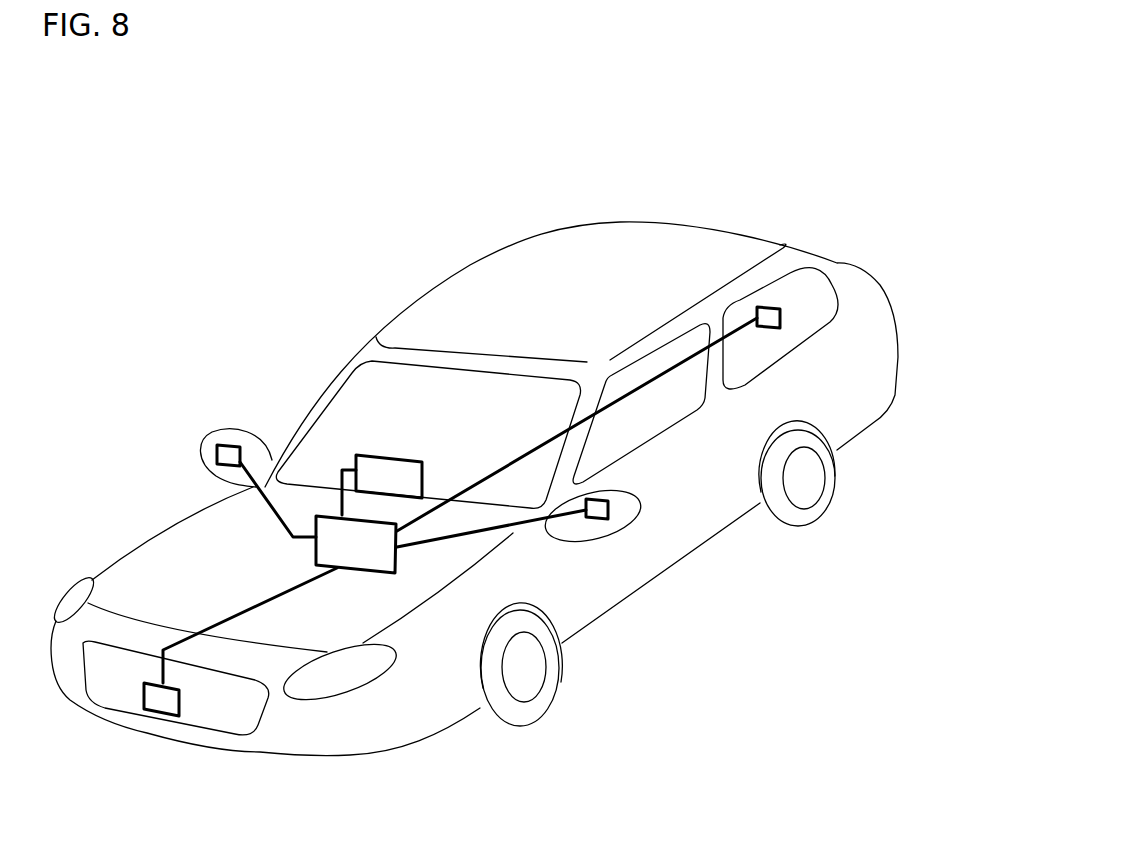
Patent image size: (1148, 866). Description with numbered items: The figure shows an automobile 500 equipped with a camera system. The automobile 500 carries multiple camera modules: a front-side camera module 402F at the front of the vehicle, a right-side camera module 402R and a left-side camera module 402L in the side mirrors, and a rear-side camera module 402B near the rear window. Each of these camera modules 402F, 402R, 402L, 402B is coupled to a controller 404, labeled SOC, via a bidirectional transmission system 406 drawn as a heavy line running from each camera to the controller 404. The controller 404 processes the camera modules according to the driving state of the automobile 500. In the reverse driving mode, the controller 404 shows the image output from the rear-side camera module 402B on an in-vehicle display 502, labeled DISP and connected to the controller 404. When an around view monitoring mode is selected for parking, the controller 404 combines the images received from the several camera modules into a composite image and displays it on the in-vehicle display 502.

The automobile 500 is at (878, 151).
The right-side camera module 402R is at (228, 444).
The left-side camera module 402L is at (597, 519).
The rear-side camera module 402B is at (770, 316).
The front-side camera module 402F is at (162, 705).
The controller 404 is at (355, 572).
The bidirectional transmission system 406 is at (270, 515).
The in-vehicle display 502 is at (405, 457).